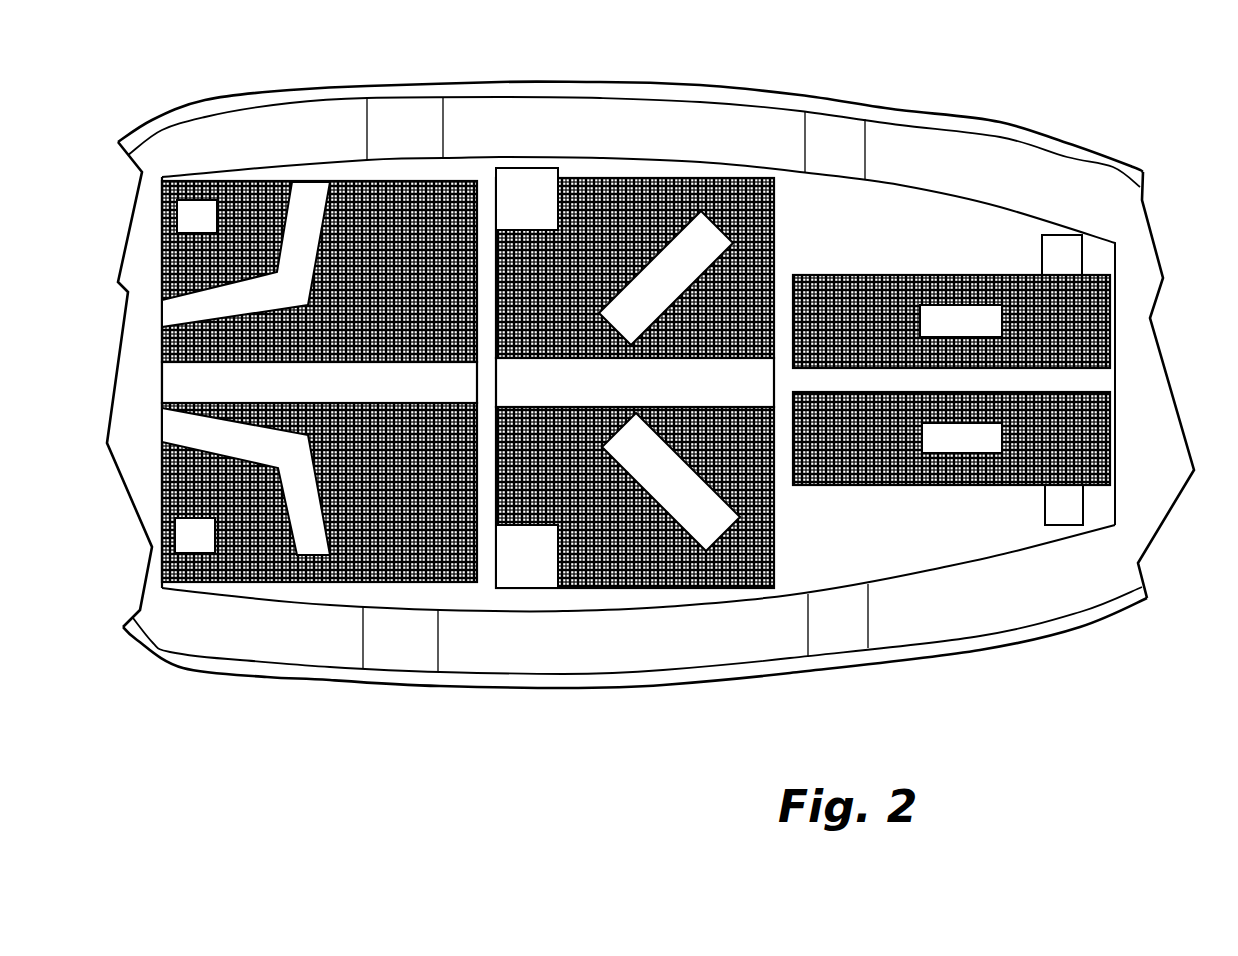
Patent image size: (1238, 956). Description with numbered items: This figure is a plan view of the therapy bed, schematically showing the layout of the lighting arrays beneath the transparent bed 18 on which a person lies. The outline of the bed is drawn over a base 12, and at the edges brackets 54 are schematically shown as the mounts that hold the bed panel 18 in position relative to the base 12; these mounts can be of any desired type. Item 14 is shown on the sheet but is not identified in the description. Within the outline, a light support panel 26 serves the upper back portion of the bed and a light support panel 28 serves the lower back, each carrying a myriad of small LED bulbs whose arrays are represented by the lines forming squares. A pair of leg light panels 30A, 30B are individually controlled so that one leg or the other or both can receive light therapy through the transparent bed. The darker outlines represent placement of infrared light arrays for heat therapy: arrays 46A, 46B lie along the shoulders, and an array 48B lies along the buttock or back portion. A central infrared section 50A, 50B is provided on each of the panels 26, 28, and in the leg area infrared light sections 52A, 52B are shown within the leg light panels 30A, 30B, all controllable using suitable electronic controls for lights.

The base 12 is at (495, 682).
The deck 14 is at (635, 362).
The transparent bed 18 is at (927, 568).
The light support panel 26 is at (408, 183).
The light support panel 28 is at (600, 175).
The leg light panel 30A is at (837, 487).
The leg light panel 30B is at (862, 290).
The infrared light array 46A is at (295, 545).
The infrared light array 46B is at (305, 193).
The infrared light array 48B is at (692, 185).
The central infrared section 50A is at (458, 378).
The central infrared section 50B is at (760, 378).
The infrared light section 52A is at (950, 445).
The infrared light section 52B is at (978, 313).
The brackets 54 is at (380, 128).